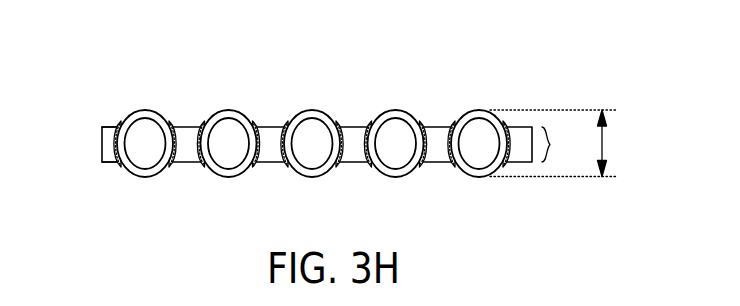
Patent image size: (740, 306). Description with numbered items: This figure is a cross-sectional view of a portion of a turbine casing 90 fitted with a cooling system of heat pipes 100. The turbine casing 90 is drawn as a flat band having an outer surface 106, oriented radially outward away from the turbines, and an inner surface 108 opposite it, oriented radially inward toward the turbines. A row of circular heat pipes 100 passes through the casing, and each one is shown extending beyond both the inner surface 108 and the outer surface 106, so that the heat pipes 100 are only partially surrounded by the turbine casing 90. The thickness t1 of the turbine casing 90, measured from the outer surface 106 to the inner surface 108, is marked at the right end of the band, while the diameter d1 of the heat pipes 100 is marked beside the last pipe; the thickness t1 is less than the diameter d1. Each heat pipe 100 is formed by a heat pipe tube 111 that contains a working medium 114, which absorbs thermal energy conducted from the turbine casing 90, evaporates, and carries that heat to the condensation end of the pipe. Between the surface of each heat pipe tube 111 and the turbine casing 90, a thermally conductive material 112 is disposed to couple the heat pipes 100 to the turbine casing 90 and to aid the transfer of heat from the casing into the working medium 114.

The turbine casing 90 is at (357, 140).
The heat pipes 100 is at (230, 92).
The outer surface 106 is at (114, 127).
The inner surface 108 is at (107, 165).
The heat pipe tube 111 is at (143, 177).
The thermally conductive material 112 is at (275, 122).
The working medium 114 is at (405, 140).
The thickness t1 is at (551, 144).
The diameter d1 is at (604, 143).